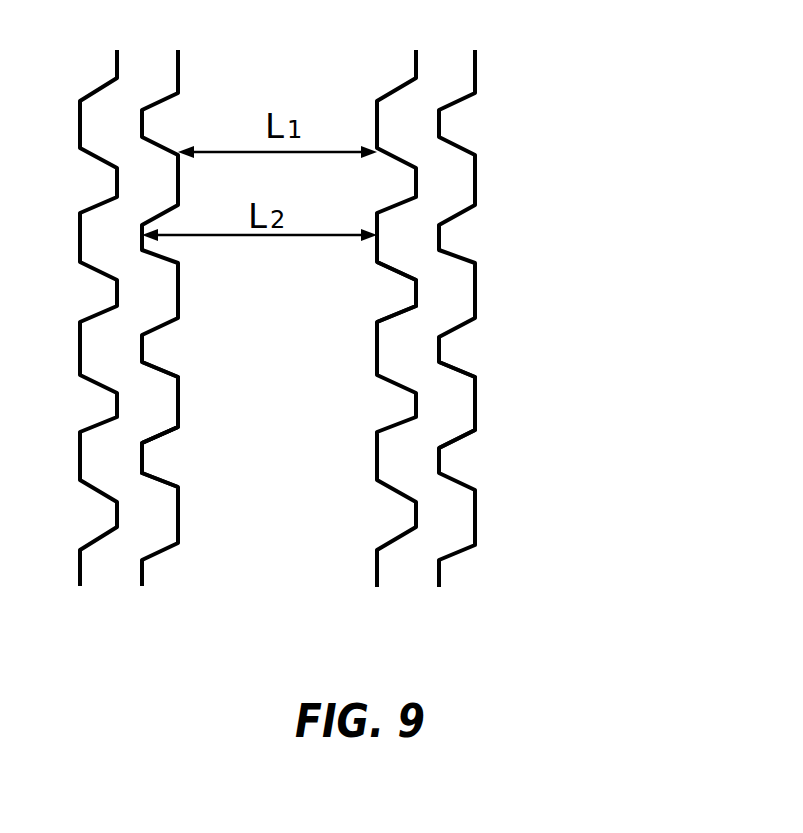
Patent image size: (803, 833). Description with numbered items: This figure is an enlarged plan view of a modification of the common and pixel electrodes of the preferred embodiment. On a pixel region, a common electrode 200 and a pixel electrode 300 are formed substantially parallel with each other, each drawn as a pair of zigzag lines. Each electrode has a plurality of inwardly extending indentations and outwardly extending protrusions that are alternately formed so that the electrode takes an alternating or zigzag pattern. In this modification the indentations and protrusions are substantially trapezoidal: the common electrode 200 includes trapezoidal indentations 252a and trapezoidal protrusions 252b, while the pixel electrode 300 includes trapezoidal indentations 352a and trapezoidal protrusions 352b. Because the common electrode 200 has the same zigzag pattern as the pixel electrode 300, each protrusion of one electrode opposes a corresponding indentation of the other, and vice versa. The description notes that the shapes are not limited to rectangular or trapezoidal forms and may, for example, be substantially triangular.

The common electrode 200 is at (115, 568).
The pixel electrode 300 is at (422, 577).
The trapezoidal indentation 252a is at (176, 460).
The trapezoidal protrusion 252b is at (185, 405).
The trapezoidal indentation 352a is at (388, 295).
The trapezoidal protrusion 352b is at (470, 407).